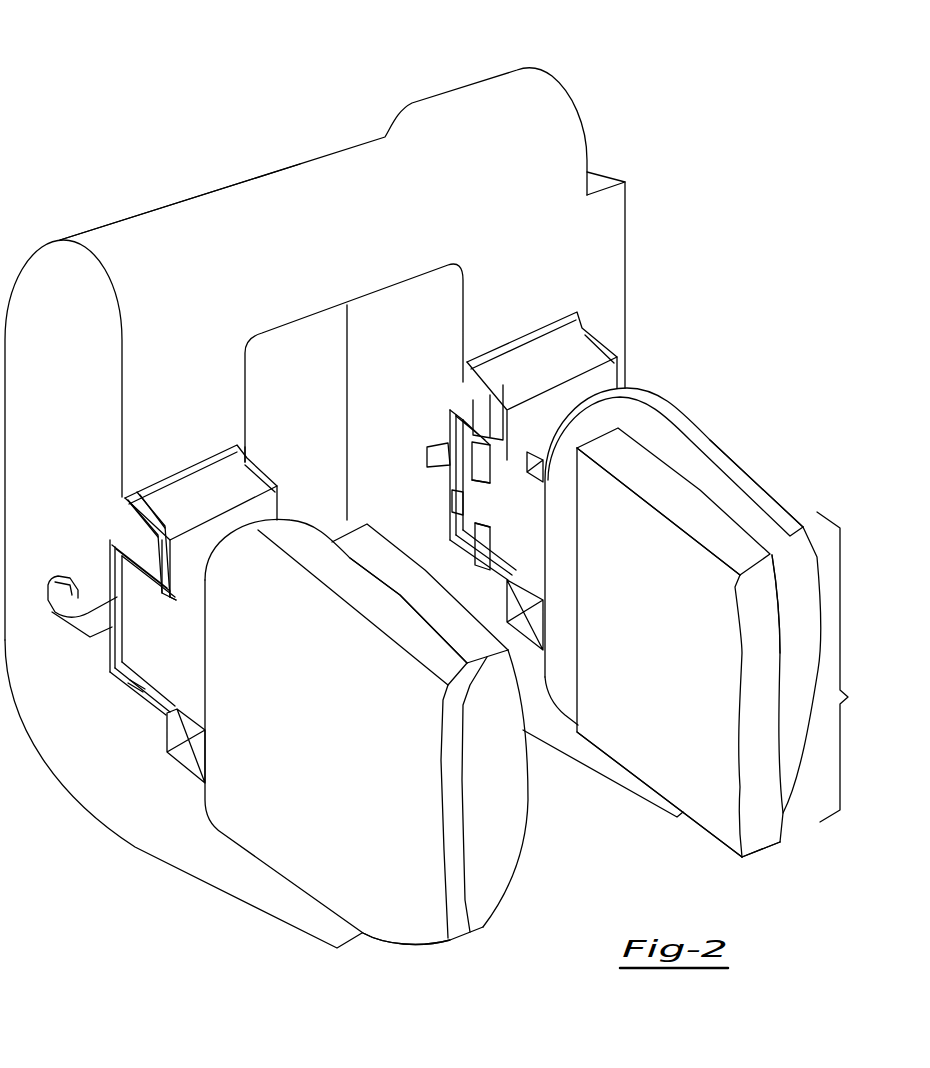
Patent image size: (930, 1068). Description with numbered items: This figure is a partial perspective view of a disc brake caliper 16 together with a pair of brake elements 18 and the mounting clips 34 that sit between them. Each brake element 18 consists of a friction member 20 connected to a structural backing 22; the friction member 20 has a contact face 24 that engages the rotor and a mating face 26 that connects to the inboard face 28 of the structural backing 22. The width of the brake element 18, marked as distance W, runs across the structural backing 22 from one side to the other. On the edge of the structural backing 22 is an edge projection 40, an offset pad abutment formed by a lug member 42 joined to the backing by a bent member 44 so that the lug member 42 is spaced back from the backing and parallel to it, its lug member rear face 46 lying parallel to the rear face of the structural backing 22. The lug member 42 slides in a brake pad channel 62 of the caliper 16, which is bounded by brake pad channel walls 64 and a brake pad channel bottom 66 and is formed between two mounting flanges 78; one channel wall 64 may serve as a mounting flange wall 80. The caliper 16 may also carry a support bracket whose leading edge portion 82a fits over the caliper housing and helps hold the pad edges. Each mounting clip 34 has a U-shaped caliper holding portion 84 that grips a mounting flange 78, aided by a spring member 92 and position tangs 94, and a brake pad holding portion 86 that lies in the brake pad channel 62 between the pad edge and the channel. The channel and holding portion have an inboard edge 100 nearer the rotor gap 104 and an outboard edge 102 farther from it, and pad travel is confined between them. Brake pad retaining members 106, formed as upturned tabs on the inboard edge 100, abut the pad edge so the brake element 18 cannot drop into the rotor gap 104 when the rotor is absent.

The caliper 16 is at (377, 137).
The leading edge portion 82a is at (150, 240).
The brake element 18 is at (277, 830).
The friction member 20 is at (500, 858).
The structural backing 22 is at (410, 930).
The contact face 24 is at (650, 647).
The mating face 26 is at (778, 682).
The inboard face 28 is at (566, 686).
The mounting clip 34 is at (273, 508).
The edge projection 40 is at (190, 703).
The lug member 42 is at (147, 647).
The bent member 44 is at (180, 630).
The lug member rear face 46 is at (155, 612).
The brake pad channel 62 is at (450, 435).
The brake pad channel wall 64 is at (462, 417).
The brake pad channel bottom 66 is at (452, 503).
The mounting flange 78 is at (128, 540).
The mounting flange wall 80 is at (147, 533).
The caliper holding portion 84 is at (152, 520).
The brake pad holding portion 86 is at (132, 688).
The spring member 92 is at (72, 585).
The position tang 94 is at (428, 462).
The inboard edge 100 is at (260, 467).
The outboard edge 102 is at (112, 672).
The rotor gap 104 is at (618, 870).
The brake pad retaining members 106 is at (480, 522).
The width W is at (851, 667).